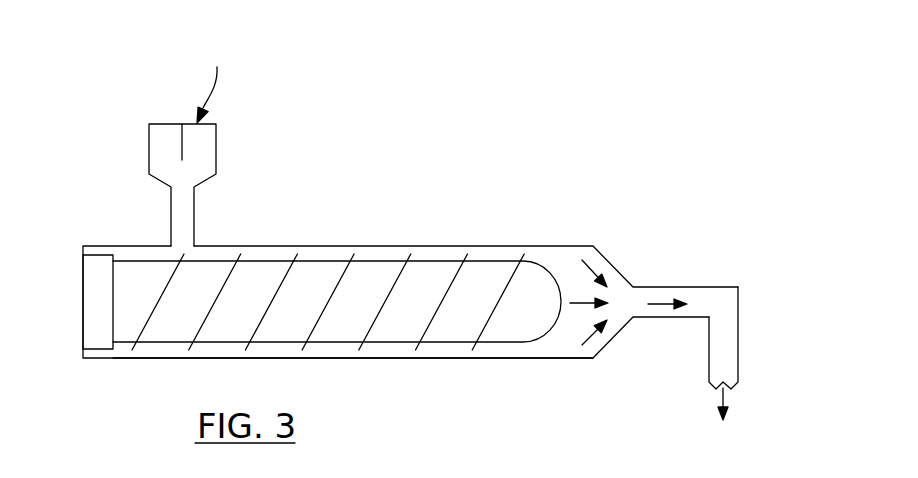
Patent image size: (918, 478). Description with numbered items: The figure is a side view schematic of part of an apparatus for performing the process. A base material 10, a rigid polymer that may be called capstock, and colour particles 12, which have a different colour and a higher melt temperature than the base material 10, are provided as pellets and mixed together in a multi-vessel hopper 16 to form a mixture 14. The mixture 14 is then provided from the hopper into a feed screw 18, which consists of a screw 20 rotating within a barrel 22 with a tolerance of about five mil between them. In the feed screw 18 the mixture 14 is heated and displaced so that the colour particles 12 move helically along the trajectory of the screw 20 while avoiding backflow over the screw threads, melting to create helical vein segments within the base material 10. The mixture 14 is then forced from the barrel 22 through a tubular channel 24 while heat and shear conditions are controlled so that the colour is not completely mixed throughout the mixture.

The base material 10 is at (163, 150).
The colour particles 12 is at (200, 158).
The mixture 14 is at (183, 222).
The multi-vessel hopper 16 is at (218, 81).
The feed screw 18 is at (386, 233).
The screw 20 is at (492, 260).
The barrel 22 is at (506, 358).
The tubular channel 24 is at (712, 287).